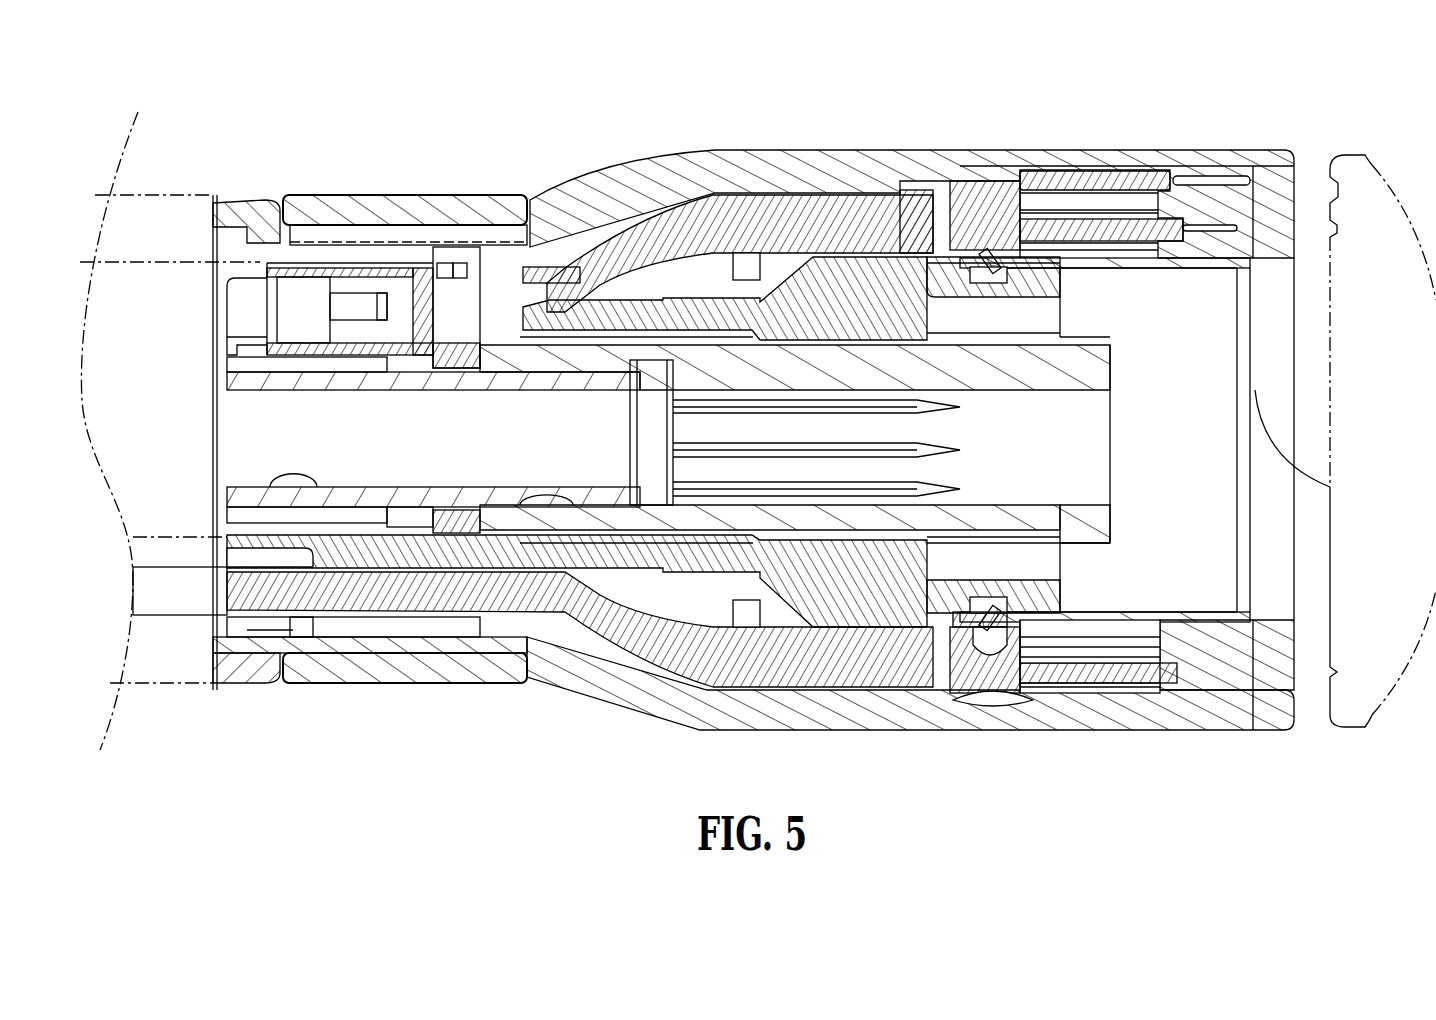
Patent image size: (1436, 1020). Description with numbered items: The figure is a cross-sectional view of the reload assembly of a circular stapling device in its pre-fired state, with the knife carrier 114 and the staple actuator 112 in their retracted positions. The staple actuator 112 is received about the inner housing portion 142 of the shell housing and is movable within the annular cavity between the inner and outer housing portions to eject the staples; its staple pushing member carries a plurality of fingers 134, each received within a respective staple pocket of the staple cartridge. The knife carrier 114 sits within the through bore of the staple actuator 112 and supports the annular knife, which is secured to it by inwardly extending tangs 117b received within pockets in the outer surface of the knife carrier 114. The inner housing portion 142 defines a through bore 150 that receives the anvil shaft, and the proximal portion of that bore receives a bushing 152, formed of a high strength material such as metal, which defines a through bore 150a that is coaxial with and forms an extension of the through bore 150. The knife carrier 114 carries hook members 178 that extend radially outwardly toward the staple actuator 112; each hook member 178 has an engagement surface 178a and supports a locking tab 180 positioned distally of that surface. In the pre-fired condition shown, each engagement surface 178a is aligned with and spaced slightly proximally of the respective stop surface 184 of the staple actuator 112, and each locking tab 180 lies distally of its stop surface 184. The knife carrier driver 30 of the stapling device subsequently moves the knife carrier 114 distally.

The knife carrier driver 30 is at (193, 572).
The staple actuator 112 is at (617, 640).
The knife carrier 114 is at (702, 578).
The inwardly extending tangs 117b is at (990, 262).
The fingers 134 is at (1120, 227).
The inner housing portion 142 is at (1087, 362).
The through bore 150 is at (573, 507).
The through bore 150a is at (313, 490).
The bushing 152 is at (327, 500).
The hook members 178 is at (597, 320).
The engagement surface 178a is at (547, 297).
The locking tab 180 is at (693, 303).
The stop surface 184 is at (550, 275).